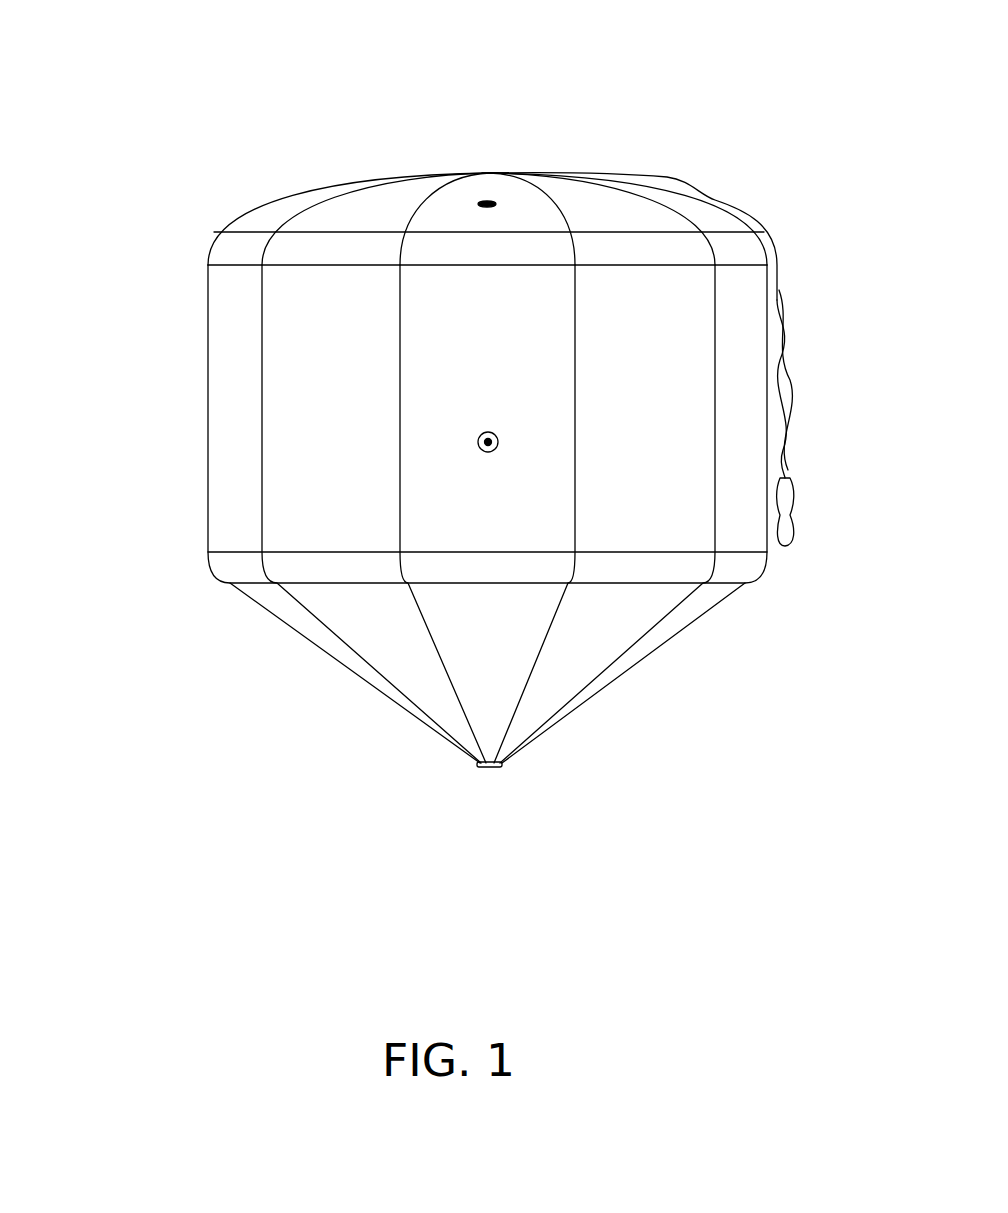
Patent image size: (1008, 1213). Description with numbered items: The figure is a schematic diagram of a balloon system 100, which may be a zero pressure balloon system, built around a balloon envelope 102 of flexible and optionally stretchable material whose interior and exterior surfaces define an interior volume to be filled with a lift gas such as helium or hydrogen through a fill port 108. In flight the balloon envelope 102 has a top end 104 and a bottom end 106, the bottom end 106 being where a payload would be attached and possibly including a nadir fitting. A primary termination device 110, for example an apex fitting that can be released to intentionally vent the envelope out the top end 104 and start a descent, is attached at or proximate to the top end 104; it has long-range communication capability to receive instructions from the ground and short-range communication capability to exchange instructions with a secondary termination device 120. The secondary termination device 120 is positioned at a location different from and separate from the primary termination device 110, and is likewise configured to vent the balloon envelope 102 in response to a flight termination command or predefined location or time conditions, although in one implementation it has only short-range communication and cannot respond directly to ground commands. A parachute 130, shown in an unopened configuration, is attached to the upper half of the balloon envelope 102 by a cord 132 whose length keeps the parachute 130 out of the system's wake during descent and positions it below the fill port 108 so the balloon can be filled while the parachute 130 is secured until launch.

The balloon system 100 is at (118, 57).
The balloon envelope 102 is at (198, 373).
The top end 104 is at (487, 171).
The bottom end 106 is at (482, 769).
The fill port 108 is at (476, 442).
The primary termination device 110 is at (520, 160).
The secondary termination device 120 is at (462, 203).
The parachute 130 is at (803, 511).
The cord 132 is at (788, 400).